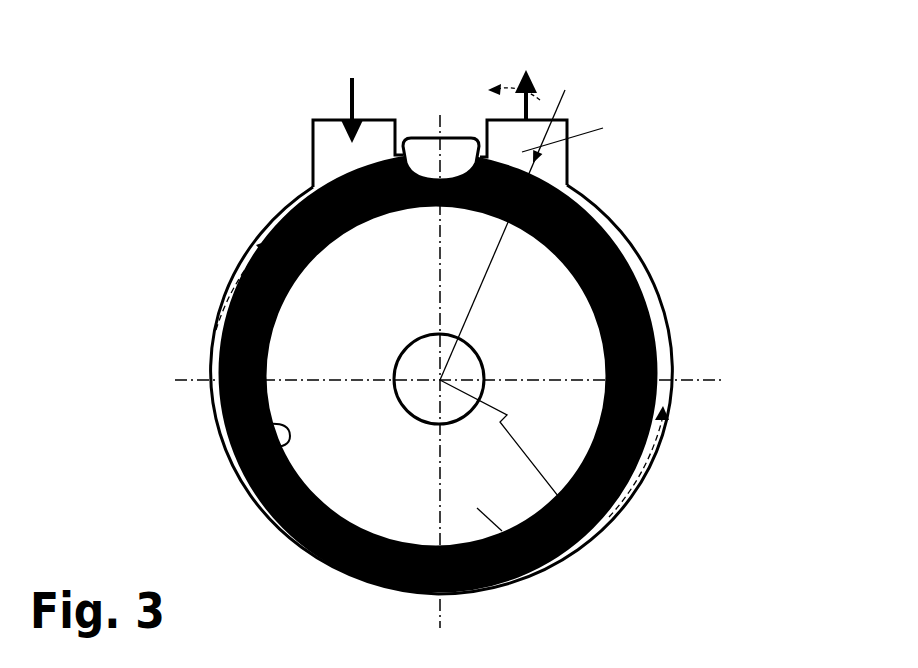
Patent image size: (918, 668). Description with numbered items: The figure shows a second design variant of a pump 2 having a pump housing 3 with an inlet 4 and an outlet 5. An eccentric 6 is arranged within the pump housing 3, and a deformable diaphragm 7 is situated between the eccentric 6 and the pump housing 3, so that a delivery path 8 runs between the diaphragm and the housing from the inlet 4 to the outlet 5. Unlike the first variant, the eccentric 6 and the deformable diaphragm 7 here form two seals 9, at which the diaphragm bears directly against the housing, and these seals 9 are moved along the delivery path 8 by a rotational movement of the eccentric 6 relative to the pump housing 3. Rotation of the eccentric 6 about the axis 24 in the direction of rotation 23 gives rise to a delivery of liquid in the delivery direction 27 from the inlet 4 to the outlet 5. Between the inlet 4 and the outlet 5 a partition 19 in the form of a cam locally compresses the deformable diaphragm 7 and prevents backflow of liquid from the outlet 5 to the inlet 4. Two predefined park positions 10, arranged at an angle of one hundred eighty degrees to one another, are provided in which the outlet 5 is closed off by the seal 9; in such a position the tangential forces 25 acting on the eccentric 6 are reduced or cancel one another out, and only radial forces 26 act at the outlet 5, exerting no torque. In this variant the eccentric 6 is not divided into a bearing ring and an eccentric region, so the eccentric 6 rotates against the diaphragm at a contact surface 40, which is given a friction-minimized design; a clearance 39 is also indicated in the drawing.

The pump 2 is at (425, 340).
The pump housing 3 is at (207, 344).
The inlet 4 is at (313, 118).
The outlet 5 is at (498, 118).
The eccentric 6 is at (546, 550).
The deformable diaphragm 7 is at (632, 300).
The delivery path 8 is at (670, 390).
The seal 9 is at (572, 190).
The park position 10 is at (565, 90).
The partition 19 is at (430, 137).
The direction of rotation 23 is at (540, 100).
The axis 24 is at (580, 524).
The tangential forces 25 is at (245, 250).
The radial forces 26 is at (603, 128).
The delivery direction 27 is at (352, 78).
The clearance gap 39 is at (502, 588).
The contact surface 40 is at (263, 442).